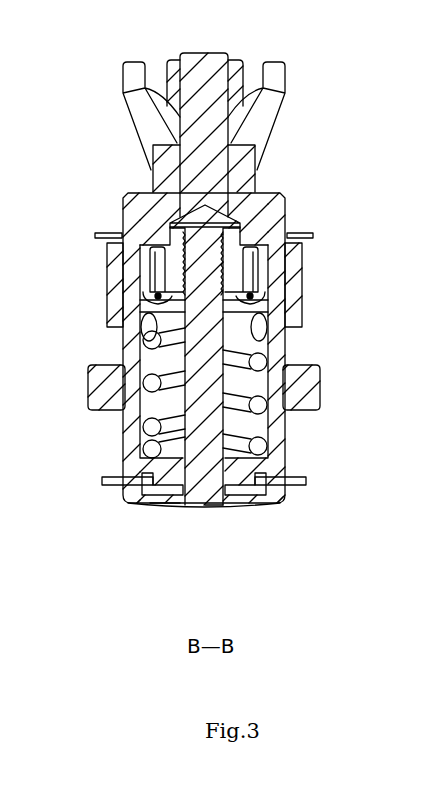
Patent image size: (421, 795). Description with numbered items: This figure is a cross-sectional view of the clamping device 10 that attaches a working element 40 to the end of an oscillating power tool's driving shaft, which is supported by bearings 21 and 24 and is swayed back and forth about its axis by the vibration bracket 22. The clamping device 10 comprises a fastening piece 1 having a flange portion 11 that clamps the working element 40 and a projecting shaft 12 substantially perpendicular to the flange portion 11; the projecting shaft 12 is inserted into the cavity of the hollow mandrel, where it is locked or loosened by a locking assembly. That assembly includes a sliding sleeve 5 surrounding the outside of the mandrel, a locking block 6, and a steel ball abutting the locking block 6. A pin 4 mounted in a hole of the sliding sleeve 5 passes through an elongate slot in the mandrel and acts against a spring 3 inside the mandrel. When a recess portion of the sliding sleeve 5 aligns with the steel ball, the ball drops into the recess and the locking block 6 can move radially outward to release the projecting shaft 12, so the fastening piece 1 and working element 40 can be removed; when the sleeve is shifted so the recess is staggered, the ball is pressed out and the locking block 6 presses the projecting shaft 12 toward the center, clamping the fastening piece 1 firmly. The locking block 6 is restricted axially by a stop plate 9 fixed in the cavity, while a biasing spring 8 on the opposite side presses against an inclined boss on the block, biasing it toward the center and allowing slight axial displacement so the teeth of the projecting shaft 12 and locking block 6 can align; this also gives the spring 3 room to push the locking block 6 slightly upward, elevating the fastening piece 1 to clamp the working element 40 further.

The fastening piece 1 is at (192, 505).
The spring 3 is at (260, 443).
The pin 4 is at (270, 323).
The sliding sleeve 5 is at (295, 307).
The locking block 6 is at (230, 260).
The biasing spring 8 is at (152, 249).
The stop plate 9 is at (157, 288).
The clamping device 10 is at (123, 523).
The flange portion 11 is at (163, 505).
The projecting shaft 12 is at (212, 505).
The bearing 21 is at (172, 63).
The vibration bracket 22 is at (148, 128).
The bearing 24 is at (115, 392).
The working element 40 is at (293, 481).